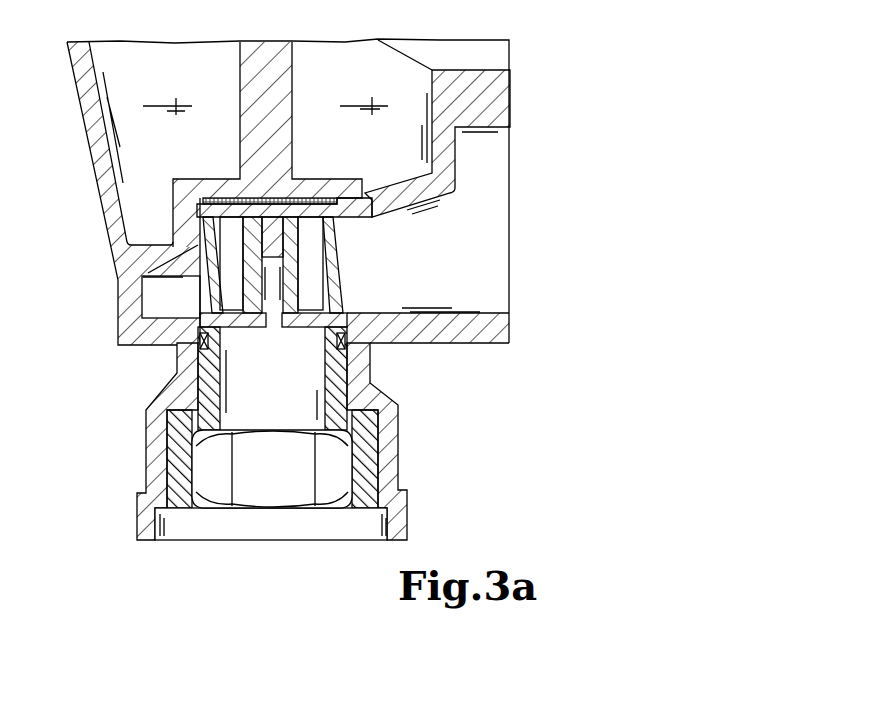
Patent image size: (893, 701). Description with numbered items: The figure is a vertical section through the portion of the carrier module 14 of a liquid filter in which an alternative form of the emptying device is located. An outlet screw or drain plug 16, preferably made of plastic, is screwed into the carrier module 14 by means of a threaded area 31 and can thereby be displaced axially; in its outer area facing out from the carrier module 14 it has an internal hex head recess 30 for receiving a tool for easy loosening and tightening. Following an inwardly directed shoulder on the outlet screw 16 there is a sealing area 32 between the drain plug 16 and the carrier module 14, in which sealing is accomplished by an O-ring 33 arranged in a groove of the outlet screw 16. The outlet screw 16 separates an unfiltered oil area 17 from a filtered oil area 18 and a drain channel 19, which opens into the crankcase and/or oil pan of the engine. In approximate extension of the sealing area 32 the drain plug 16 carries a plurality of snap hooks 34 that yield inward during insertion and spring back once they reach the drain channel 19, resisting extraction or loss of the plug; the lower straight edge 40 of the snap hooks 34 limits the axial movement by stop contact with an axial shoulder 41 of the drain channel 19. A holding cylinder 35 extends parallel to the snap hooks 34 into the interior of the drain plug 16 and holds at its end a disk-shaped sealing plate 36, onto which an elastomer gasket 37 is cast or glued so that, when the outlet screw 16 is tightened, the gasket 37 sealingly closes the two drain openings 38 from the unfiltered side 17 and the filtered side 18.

The carrier module 14 is at (485, 102).
The outlet screw 16 is at (186, 565).
The unfiltered oil area 17 is at (172, 68).
The filtered oil area 18 is at (405, 82).
The drain channel 19 is at (487, 238).
The internal hex head recess 30 is at (280, 487).
The threaded area 31 is at (152, 450).
The sealing area 32 is at (197, 373).
The O-ring 33 is at (337, 338).
The snap hooks 34 is at (340, 236).
The holding cylinder 35 is at (268, 328).
The sealing plate 36 is at (207, 212).
The elastomer gasket 37 is at (226, 198).
The drain openings 38 is at (236, 185).
The lower straight edge 40 is at (338, 248).
The axial shoulder 41 is at (347, 313).